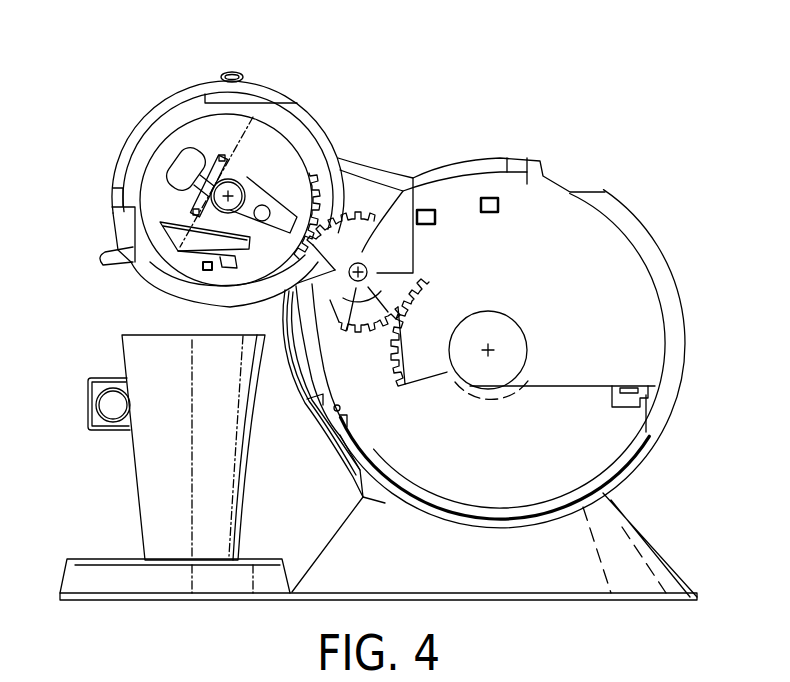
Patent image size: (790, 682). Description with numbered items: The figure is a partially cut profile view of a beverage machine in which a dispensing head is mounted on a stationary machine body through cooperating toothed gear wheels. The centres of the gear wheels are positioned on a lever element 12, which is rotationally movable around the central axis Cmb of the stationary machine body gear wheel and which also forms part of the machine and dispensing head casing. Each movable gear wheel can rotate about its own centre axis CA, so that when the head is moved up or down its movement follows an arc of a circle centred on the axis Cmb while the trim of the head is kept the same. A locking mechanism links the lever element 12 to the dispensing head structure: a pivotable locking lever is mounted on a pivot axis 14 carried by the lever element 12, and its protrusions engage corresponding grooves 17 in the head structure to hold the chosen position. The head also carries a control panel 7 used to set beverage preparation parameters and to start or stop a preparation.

The control panel 7 is at (232, 72).
The pivot axis 14 is at (222, 158).
The grooves 17 is at (304, 188).
The lever element 12 is at (362, 168).
The centre axis CA is at (232, 192).
The central axis of the machine gear wheel Cmb is at (491, 348).